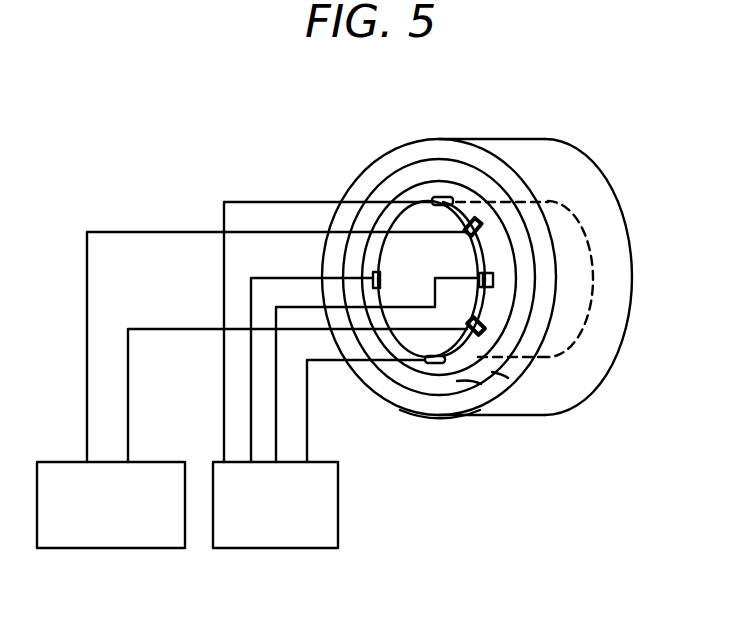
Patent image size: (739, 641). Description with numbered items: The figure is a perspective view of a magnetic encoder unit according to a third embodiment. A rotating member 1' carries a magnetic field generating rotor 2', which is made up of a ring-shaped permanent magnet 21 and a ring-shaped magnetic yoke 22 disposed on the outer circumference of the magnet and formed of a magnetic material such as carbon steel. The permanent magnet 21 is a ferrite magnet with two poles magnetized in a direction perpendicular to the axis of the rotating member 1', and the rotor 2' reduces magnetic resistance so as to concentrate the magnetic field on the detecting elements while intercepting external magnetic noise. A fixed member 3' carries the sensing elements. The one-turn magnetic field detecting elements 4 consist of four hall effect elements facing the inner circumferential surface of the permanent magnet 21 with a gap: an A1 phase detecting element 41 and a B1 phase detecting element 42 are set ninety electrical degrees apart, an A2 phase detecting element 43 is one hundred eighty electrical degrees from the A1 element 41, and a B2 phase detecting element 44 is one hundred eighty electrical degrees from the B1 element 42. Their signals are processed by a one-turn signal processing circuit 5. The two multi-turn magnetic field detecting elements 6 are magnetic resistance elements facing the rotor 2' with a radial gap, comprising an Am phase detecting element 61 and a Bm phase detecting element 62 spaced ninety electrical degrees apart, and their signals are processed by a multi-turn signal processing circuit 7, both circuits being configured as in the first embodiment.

The rotating member 1' is at (506, 277).
The magnetic field generating rotor 2' is at (440, 466).
The ring-shaped permanent magnet 21 is at (481, 384).
The ring-shaped magnetic yoke 22 is at (497, 373).
The fixed member 3' is at (412, 236).
The one-turn magnetic field detecting elements 4 is at (446, 182).
The A1 phase detecting element 41 is at (486, 204).
The B1 phase detecting element 42 is at (496, 278).
The A2 phase detecting element 43 is at (432, 367).
The B2 phase detecting element 44 is at (417, 257).
The one-turn signal processing circuit 5 is at (218, 473).
The multi-turn magnetic field detecting elements 6 is at (490, 186).
The Am phase detecting element 61 is at (483, 226).
The Bm phase detecting element 62 is at (493, 328).
The multi-turn signal processing circuit 7 is at (48, 473).